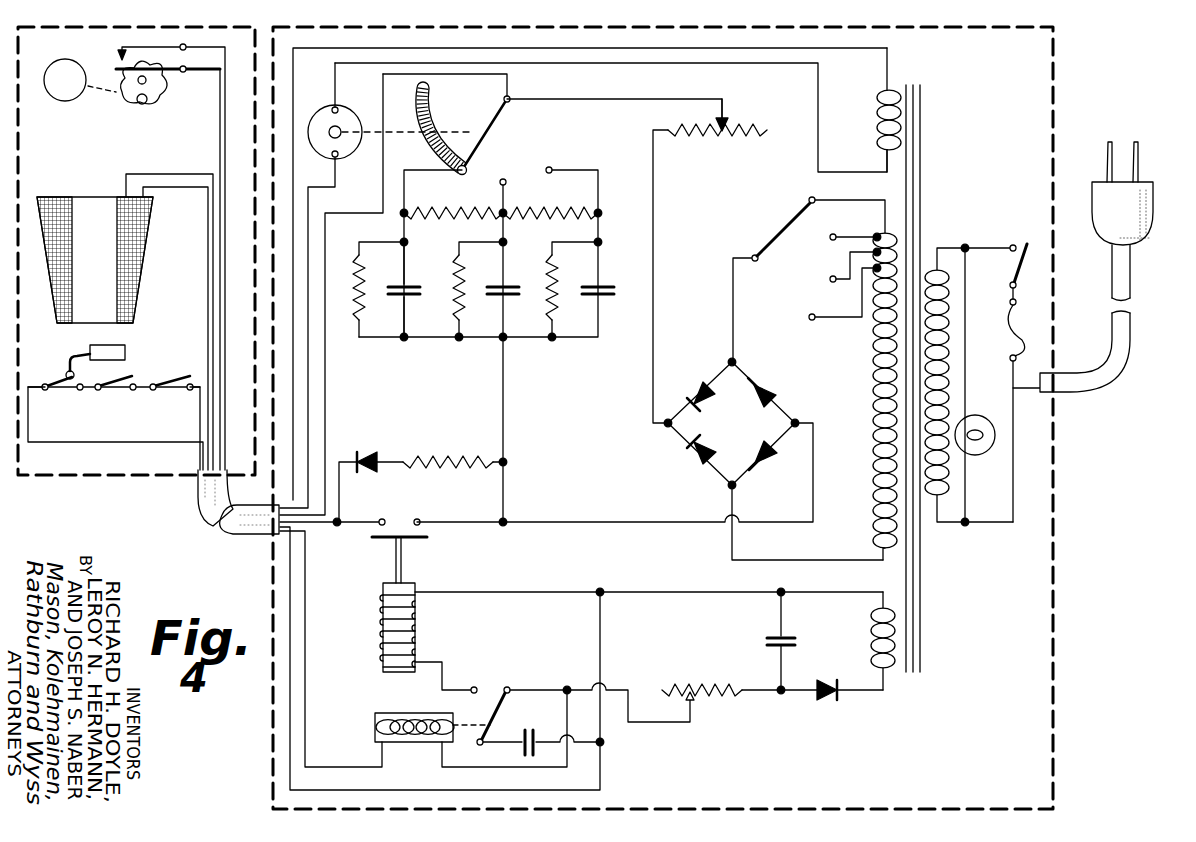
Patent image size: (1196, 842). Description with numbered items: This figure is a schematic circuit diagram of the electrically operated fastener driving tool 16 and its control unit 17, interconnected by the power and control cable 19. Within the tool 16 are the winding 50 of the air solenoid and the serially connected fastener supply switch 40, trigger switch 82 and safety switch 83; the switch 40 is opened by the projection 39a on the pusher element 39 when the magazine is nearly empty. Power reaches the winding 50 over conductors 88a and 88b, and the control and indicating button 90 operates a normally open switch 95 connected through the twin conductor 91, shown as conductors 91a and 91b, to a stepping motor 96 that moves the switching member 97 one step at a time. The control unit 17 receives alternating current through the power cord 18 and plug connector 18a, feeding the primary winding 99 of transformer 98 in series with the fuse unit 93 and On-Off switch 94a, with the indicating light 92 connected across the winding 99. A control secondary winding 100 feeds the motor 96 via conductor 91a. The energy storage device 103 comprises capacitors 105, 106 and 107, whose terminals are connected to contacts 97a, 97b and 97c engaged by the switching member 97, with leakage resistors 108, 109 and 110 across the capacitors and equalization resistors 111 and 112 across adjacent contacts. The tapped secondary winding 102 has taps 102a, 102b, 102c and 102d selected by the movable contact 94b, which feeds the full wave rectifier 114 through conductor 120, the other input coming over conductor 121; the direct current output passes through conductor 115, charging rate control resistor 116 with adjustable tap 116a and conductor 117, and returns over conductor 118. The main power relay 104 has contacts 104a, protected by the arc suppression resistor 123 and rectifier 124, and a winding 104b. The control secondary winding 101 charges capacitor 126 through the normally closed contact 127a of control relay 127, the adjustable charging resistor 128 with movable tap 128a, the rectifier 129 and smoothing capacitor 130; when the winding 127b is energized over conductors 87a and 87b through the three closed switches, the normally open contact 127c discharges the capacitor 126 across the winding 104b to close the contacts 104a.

The fastener driving tool 16 is at (120, 482).
The control unit 17 is at (1057, 508).
The power cord 18 is at (1096, 390).
The plug connector 18a is at (1142, 237).
The power and control cable 19 is at (230, 530).
The pusher element 39 is at (126, 346).
The projection 39a is at (70, 352).
The fastener supply switch 40 is at (52, 391).
The winding 50 is at (136, 240).
The trigger switch 82 is at (126, 390).
The safety switch 83 is at (167, 376).
The conductor 87a is at (200, 424).
The conductor 87b is at (90, 444).
The power supply conductor 88a is at (151, 174).
The power supply conductor 88b is at (163, 188).
The control and indicating button 90 is at (61, 97).
The insulated twin conductor 91 is at (216, 131).
The conductor 91a is at (226, 50).
The conductor 91b is at (219, 86).
The indicating light 92 is at (990, 452).
The fuse unit 93 is at (1021, 330).
The On-Off switch 94a is at (1030, 250).
The movable contact 94b is at (775, 240).
The normally open switch 95 is at (165, 71).
The stepping motor 96 is at (365, 96).
The switching member 97 is at (511, 101).
The contact 97a is at (462, 163).
The contact 97b is at (503, 179).
The contact 97c is at (549, 167).
The transformer 98 is at (962, 218).
The primary winding 99 is at (950, 376).
The control secondary winding 100 is at (898, 86).
The control secondary winding 101 is at (890, 678).
The main high voltage tapped secondary winding 102 is at (875, 375).
The tap 102a is at (815, 197).
The tap 102b is at (831, 235).
The tap 102c is at (830, 277).
The tap 102d is at (812, 314).
The energy storage device 103 is at (438, 257).
The main power relay 104 is at (414, 606).
The contacts 104a is at (415, 519).
The winding 104b is at (382, 622).
The capacitor 105 is at (400, 287).
The capacitor 106 is at (508, 284).
The capacitor 107 is at (603, 283).
The leakage resistor 108 is at (355, 268).
The leakage resistor 109 is at (455, 290).
The leakage resistor 110 is at (548, 293).
The equalization resistor 111 is at (466, 207).
The equalization resistor 112 is at (533, 207).
The full wave rectifier 114 is at (745, 432).
The conductor 115 is at (655, 220).
The charging rate control resistor 116 is at (707, 134).
The adjustable tap 116a is at (731, 120).
The conductor 117 is at (624, 98).
The conductor 118 is at (638, 521).
The conductor 120 is at (733, 306).
The conductor 121 is at (835, 558).
The resistor 123 is at (445, 458).
The rectifier 124 is at (363, 450).
The capacitor 126 is at (545, 717).
The control relay 127 is at (407, 740).
The normally closed contact 127a is at (509, 687).
The winding 127b is at (405, 710).
The normally open contact 127c is at (474, 687).
The adjustable charging resistor 128 is at (694, 686).
The movable tap 128a is at (697, 703).
The rectifier 129 is at (825, 702).
The smoothing capacitor 130 is at (791, 636).